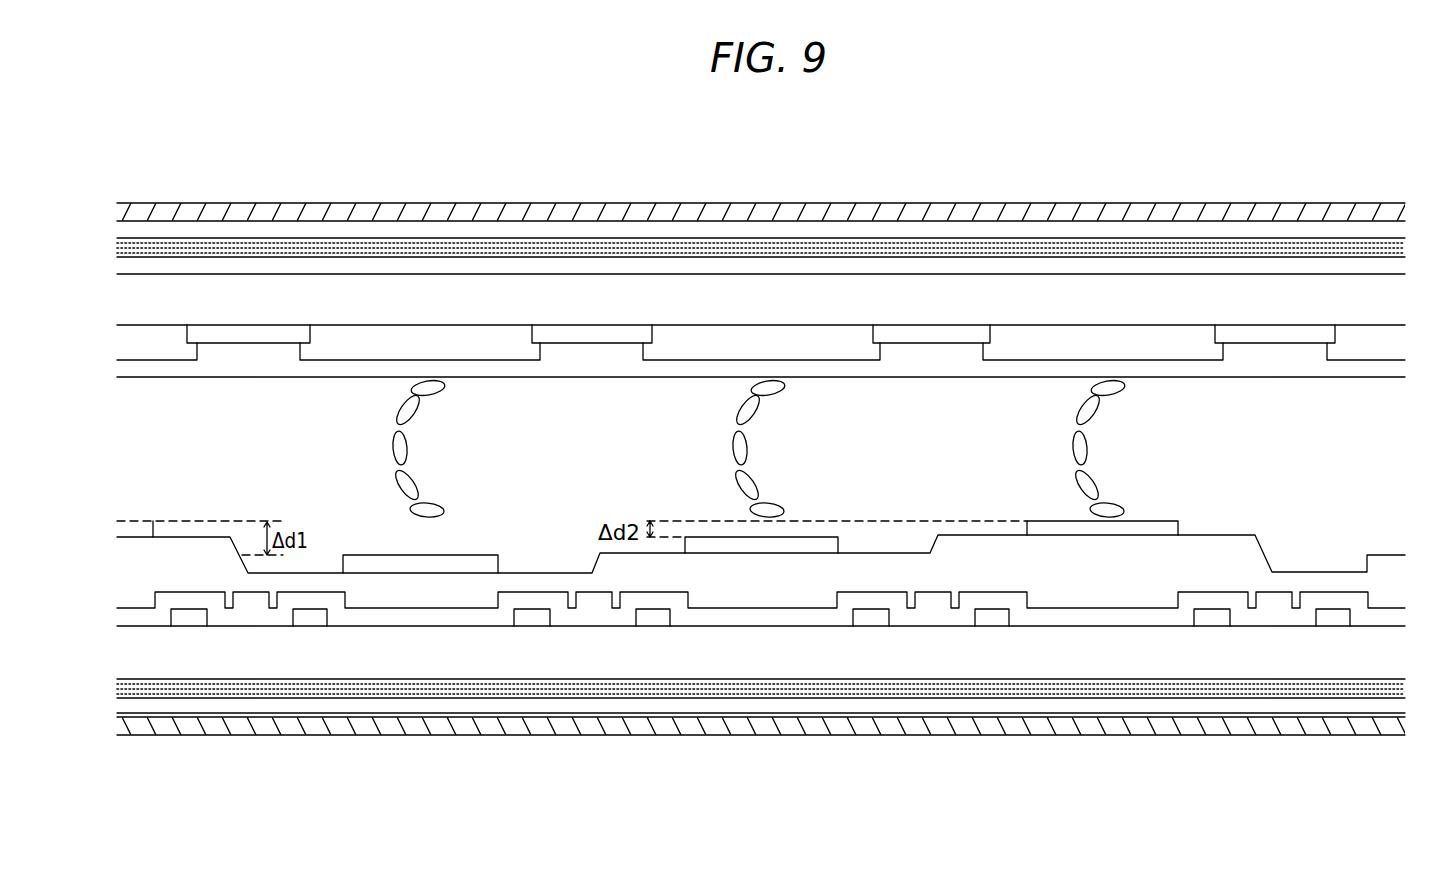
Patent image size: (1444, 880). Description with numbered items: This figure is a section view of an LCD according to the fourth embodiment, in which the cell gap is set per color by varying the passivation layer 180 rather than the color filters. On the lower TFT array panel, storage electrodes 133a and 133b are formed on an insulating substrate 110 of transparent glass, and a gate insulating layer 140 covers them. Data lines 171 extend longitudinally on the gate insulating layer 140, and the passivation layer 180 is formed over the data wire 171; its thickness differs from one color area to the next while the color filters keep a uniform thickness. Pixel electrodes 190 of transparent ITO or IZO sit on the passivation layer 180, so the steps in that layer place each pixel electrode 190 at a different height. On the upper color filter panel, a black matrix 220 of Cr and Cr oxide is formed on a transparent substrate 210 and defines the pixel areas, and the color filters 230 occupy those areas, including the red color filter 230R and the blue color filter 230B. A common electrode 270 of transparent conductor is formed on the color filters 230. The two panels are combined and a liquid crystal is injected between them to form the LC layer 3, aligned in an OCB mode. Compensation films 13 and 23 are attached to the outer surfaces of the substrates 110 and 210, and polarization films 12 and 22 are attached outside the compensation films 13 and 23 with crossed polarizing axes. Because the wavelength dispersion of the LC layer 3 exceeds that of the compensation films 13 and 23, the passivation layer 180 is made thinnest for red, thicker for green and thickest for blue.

The LC layer 3 is at (1375, 486).
The polarization film 12 is at (933, 727).
The compensation film 13 is at (480, 688).
The polarization film 22 is at (443, 218).
The compensation film 23 is at (510, 250).
The insulating substrate 110 is at (808, 650).
The storage electrode 133a is at (310, 618).
The storage electrode 133b is at (192, 618).
The gate insulating layer 140 is at (597, 618).
The data line 171 is at (255, 600).
The passivation layer 180 is at (360, 600).
The pixel electrode 190 is at (422, 565).
The transparent substrate 210 is at (823, 290).
The black matrix 220 is at (250, 335).
The color filter 230 is at (733, 335).
The red color filter 230R is at (358, 335).
The blue color filter 230B is at (1103, 253).
The common electrode 270 is at (1025, 367).